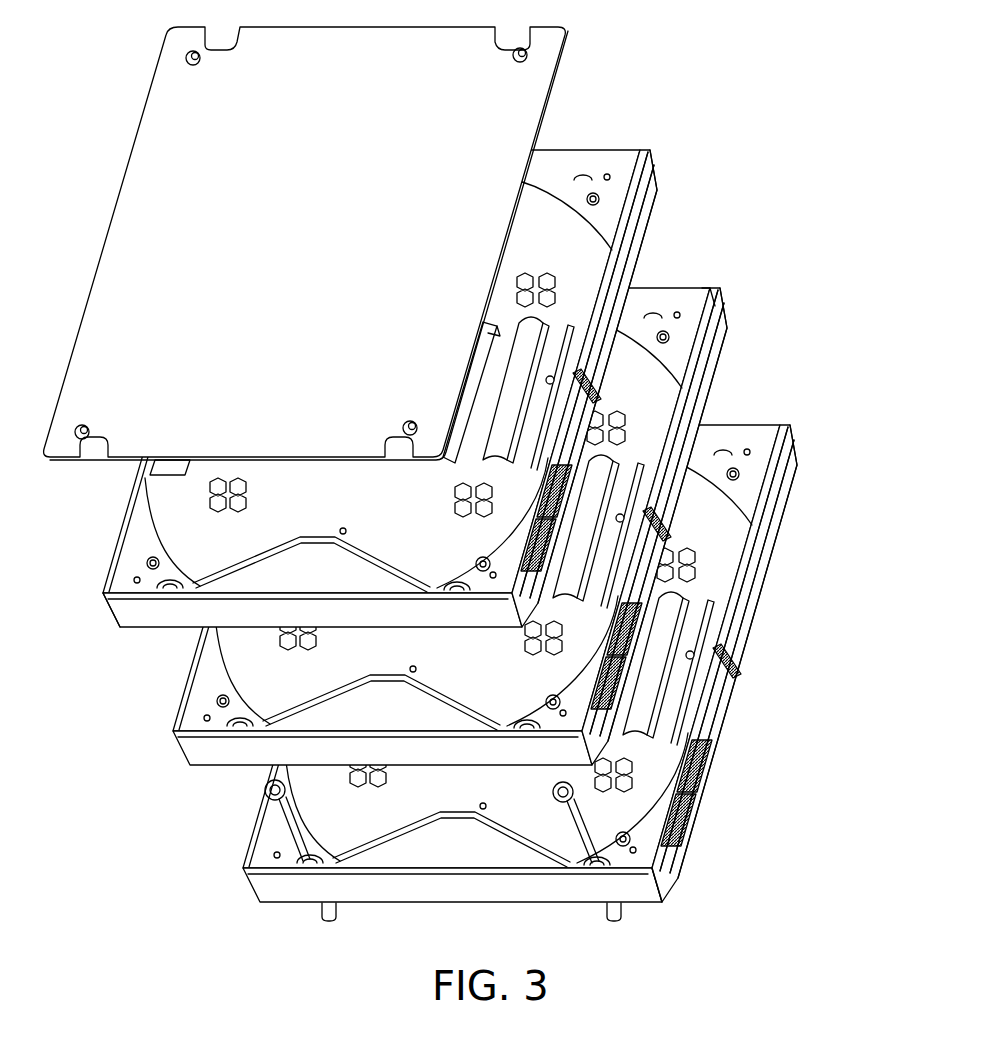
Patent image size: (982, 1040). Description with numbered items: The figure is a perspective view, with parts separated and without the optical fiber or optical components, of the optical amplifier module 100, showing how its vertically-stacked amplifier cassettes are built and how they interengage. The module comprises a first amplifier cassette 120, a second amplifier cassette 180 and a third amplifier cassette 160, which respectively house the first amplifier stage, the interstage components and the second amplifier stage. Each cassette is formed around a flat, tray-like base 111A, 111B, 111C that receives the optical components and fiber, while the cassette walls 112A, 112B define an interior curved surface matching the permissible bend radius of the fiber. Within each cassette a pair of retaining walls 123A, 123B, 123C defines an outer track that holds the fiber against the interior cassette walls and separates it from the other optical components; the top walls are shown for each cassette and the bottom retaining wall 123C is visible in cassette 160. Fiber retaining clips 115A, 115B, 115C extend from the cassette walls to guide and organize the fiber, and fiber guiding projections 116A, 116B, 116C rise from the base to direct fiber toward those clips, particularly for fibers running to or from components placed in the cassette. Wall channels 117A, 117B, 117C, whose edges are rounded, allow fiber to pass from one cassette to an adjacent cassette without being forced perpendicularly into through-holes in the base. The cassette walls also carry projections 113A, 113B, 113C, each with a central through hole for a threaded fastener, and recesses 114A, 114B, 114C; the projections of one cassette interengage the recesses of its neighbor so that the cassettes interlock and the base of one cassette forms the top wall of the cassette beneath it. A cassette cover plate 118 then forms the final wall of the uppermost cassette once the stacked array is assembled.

The optical amplifier module 100 is at (434, 502).
The cassette cover plate 118 is at (145, 205).
The tray-like base 111A is at (504, 680).
The tray-like base 111B is at (427, 513).
The tray-like base 111C is at (366, 388).
The cassette wall 112A is at (380, 821).
The cassette wall 112B is at (126, 631).
The projection 113A is at (683, 863).
The projection 113B is at (715, 372).
The projection 113C is at (150, 555).
The recess 114A is at (682, 901).
The recess 114B is at (699, 283).
The recess 114C is at (102, 597).
The fiber retaining clip 115A is at (440, 834).
The fiber retaining clip 115B is at (372, 698).
The fiber retaining clip 115C is at (253, 555).
The fiber guiding projection 116A is at (561, 674).
The fiber guiding projection 116B is at (452, 542).
The fiber guiding projection 116C is at (242, 500).
The wall channel 117A is at (762, 678).
The wall channel 117B is at (694, 524).
The wall channel 117C is at (585, 380).
The retaining wall 123A is at (724, 665).
The retaining wall 123B is at (692, 533).
The retaining wall 123C is at (583, 330).
The first amplifier cassette 120 is at (753, 651).
The third amplifier cassette 160 is at (648, 198).
The second amplifier cassette 180 is at (685, 514).